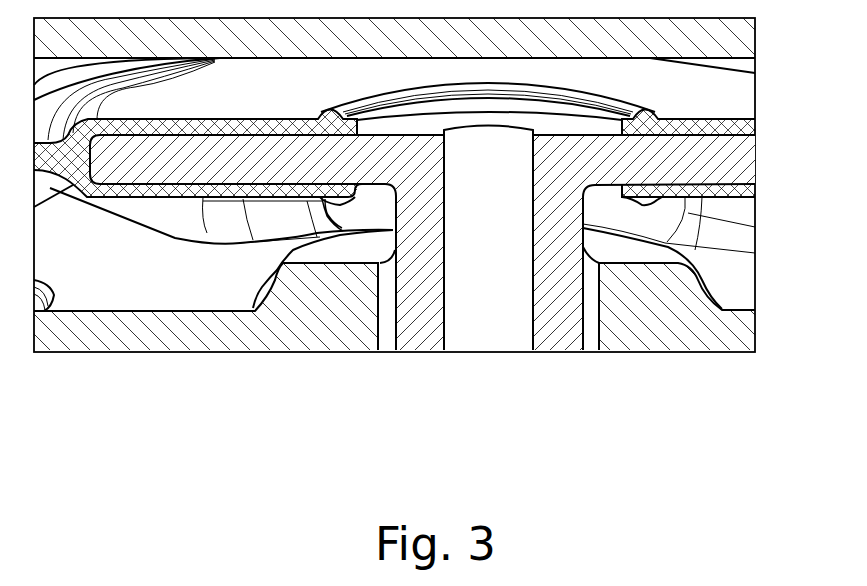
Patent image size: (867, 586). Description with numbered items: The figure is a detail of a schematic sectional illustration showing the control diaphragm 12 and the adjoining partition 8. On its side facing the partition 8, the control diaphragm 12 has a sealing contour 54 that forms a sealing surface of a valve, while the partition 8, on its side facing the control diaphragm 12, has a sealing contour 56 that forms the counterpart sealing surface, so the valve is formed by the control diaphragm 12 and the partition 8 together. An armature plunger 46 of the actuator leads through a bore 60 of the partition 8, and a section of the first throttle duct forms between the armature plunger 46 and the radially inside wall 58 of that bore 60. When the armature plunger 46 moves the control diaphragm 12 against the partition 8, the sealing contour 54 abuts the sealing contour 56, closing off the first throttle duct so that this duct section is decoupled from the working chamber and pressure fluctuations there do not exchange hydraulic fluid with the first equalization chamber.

The partition 8 is at (695, 333).
The control diaphragm 12 is at (168, 160).
The armature plunger 46 is at (490, 335).
The sealing contour 54 is at (325, 213).
The sealing contour 56 is at (708, 284).
The radially inside wall 58 is at (385, 327).
The bore 60 is at (593, 335).